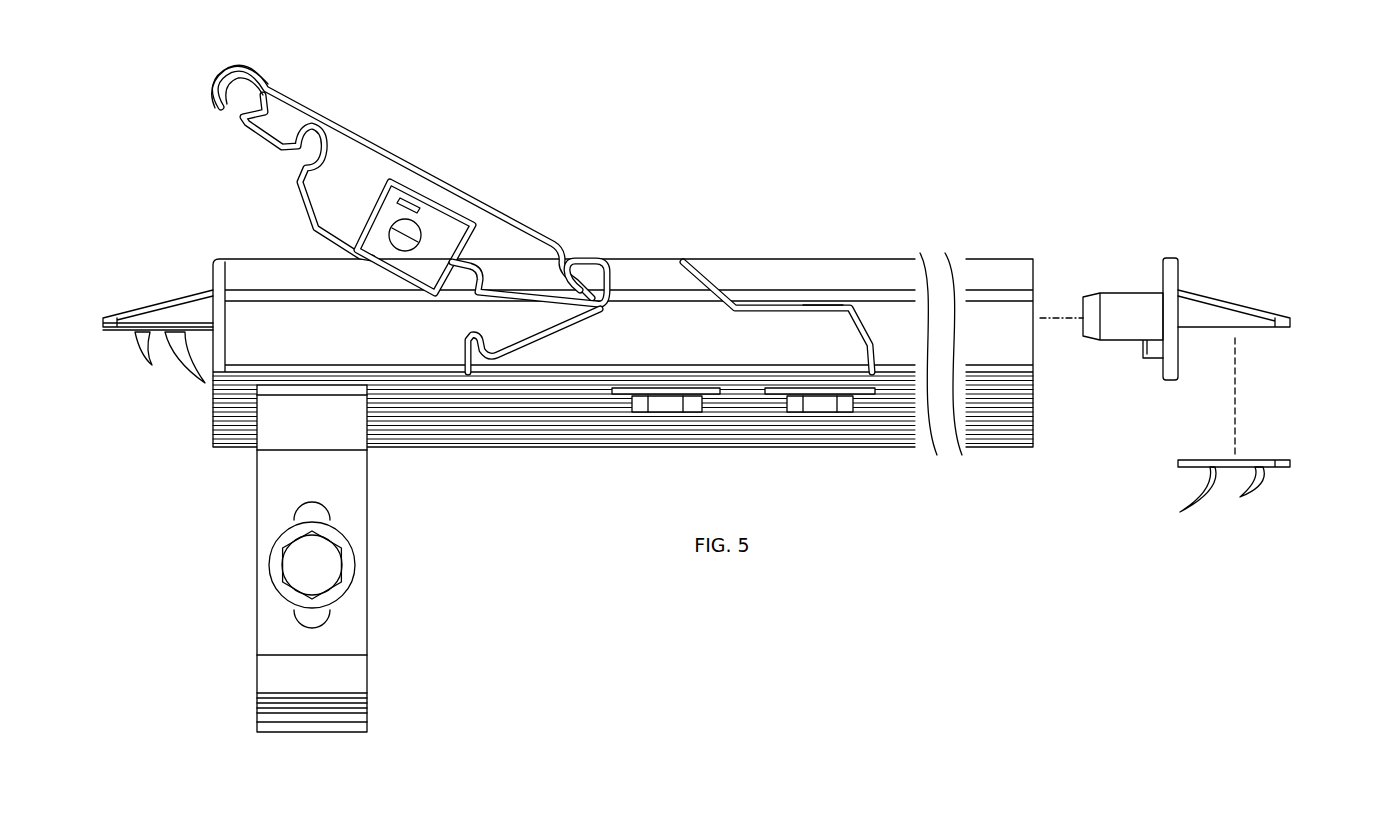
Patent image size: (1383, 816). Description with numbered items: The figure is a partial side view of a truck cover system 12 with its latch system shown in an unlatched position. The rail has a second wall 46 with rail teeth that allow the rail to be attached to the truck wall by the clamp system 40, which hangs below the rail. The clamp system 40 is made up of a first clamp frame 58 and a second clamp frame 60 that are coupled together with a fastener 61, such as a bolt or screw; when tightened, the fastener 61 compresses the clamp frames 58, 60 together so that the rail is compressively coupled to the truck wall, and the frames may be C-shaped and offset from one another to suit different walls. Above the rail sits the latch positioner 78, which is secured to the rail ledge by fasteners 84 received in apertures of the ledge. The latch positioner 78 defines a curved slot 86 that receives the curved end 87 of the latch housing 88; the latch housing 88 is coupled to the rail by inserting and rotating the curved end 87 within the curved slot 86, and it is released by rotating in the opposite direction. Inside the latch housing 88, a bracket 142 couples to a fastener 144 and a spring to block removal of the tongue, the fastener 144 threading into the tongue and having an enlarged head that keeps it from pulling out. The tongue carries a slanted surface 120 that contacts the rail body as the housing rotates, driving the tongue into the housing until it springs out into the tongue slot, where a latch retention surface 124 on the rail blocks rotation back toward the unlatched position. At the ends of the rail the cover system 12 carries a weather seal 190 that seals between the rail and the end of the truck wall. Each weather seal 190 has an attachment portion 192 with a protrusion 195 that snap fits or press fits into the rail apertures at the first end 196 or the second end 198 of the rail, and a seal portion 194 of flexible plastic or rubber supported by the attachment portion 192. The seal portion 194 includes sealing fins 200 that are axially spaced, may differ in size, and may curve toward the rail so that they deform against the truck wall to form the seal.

The truck cover system 12 is at (146, 78).
The latch housing 88 is at (264, 77).
The first end 196 is at (210, 190).
The latch retention surface 124 is at (402, 178).
The bracket 142 is at (378, 218).
The fastener 144 is at (405, 240).
The curved end 87 is at (606, 302).
The latch positioner 78 is at (688, 320).
The surface 120 is at (892, 226).
The second end 198 is at (1039, 230).
The protrusion 195 is at (1130, 302).
The attachment portion 192 is at (1207, 297).
The weather seal 190 is at (1249, 288).
The sealing fins 200 is at (1206, 500).
The seal portion 194 is at (1282, 499).
The second wall 46 is at (478, 420).
The curved slot 86 is at (542, 348).
The fasteners 84 is at (665, 402).
The second clamp frame 60 is at (270, 632).
The fastener 61 is at (293, 567).
The first clamp frame 58 is at (313, 722).
The clamp system 40 is at (418, 690).